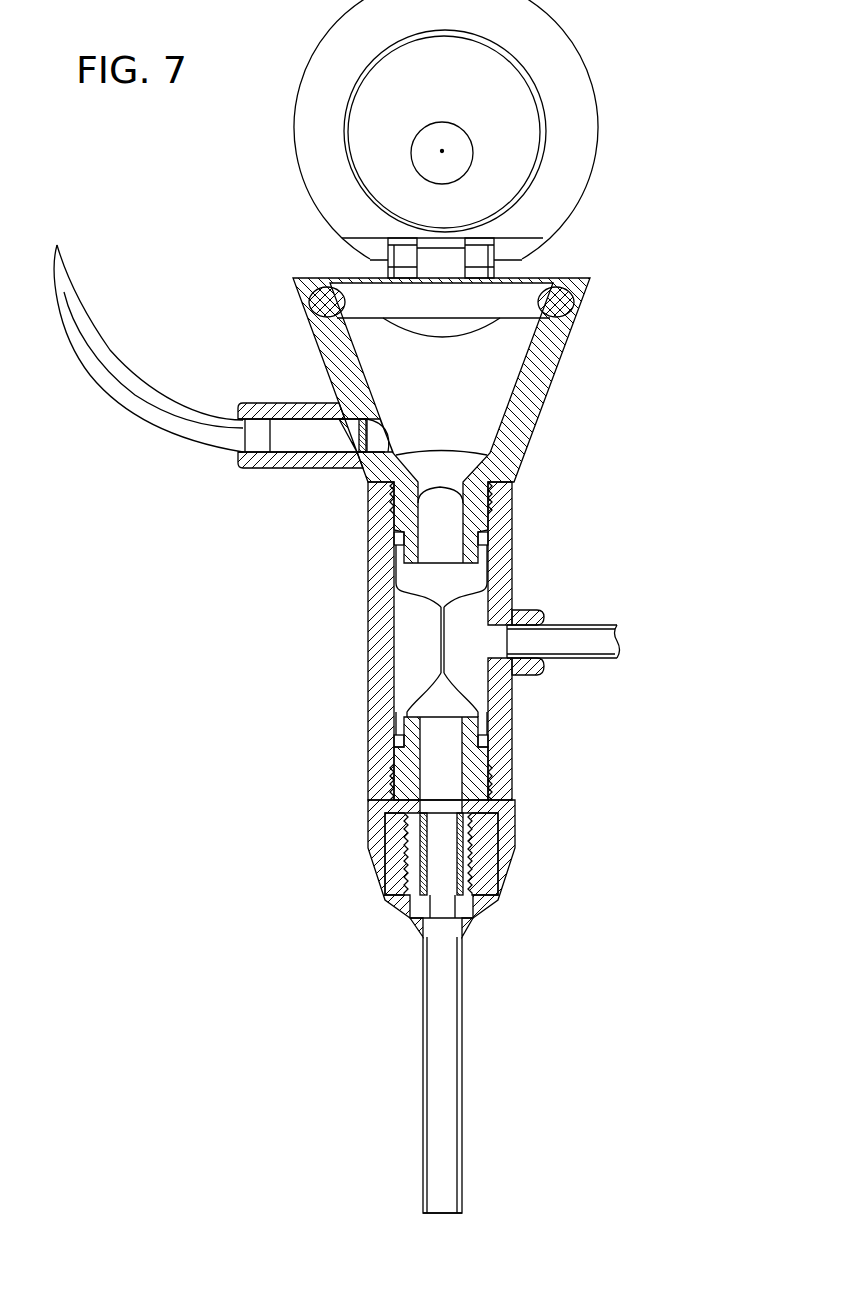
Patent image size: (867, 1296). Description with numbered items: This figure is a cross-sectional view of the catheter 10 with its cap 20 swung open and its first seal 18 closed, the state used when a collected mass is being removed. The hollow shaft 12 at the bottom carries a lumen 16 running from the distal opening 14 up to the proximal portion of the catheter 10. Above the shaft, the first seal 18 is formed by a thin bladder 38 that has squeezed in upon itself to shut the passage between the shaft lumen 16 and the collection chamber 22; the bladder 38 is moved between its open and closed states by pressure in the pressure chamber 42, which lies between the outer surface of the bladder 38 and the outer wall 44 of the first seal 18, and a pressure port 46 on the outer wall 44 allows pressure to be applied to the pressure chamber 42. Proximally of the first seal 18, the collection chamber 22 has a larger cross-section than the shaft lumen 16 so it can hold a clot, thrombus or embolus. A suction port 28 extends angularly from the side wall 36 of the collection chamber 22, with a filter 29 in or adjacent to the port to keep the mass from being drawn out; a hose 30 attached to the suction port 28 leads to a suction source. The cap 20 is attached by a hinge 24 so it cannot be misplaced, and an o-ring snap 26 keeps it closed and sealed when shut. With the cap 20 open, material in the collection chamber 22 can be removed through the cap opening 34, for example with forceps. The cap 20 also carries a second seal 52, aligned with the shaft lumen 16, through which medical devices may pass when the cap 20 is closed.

The catheter 10 is at (197, 622).
The shaft 12 is at (458, 1008).
The distal opening 14 is at (442, 1215).
The lumen 16 is at (442, 1057).
The first seal 18 is at (444, 625).
The cap 20 is at (580, 197).
The collection chamber 22 is at (477, 378).
The hinge 24 is at (390, 272).
The snap 26 is at (562, 302).
The suction port 28 is at (308, 437).
The filter 29 is at (358, 437).
The hose 30 is at (137, 390).
The cap opening 34 is at (520, 284).
The side wall 36 is at (330, 348).
The bladder 38 is at (397, 583).
The pressure chamber 42 is at (423, 657).
The outer wall 44 is at (382, 621).
The pressure port 46 is at (543, 618).
The second seal 52 is at (453, 152).